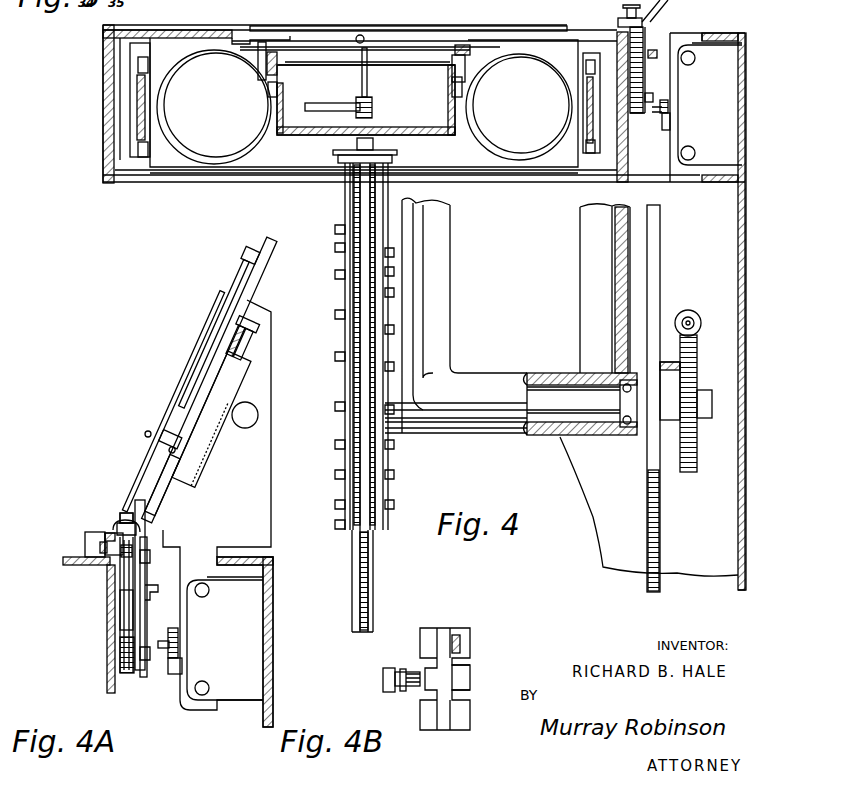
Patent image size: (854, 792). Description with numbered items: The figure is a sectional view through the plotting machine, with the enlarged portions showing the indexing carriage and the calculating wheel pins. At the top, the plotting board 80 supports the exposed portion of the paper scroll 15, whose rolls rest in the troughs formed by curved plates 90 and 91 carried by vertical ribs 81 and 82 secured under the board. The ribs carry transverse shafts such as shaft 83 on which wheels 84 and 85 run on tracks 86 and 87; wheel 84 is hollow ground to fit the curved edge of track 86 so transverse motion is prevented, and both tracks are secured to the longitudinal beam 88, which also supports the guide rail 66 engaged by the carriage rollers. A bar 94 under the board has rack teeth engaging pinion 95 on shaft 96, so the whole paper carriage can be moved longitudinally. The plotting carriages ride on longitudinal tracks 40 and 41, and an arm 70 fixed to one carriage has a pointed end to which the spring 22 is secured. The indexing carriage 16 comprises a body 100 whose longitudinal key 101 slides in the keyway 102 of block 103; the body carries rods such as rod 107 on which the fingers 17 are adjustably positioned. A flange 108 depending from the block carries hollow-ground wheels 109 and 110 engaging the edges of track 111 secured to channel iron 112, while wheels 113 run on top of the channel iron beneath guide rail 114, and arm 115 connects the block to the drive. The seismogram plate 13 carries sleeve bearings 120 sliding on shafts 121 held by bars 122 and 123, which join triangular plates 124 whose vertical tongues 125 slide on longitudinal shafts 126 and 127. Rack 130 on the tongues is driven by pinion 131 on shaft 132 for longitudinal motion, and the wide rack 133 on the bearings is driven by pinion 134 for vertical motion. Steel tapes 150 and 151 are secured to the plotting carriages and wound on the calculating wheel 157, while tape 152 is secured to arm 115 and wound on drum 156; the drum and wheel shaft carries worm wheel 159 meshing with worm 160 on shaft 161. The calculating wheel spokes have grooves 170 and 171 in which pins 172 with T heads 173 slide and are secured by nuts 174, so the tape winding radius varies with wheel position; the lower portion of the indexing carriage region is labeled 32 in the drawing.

In FIG. 4A, the plate 13 is at (247, 283).
In FIG. 4, the scroll 15 is at (515, 46).
In FIG. 4A, the indexing carriage 16 is at (110, 473).
In FIG. 4A, the fingers 17 is at (142, 432).
In FIG. 4, the spring 22 is at (303, 40).
In FIG. 4A, the bar lower end 32 is at (167, 455).
In FIG. 4, the longitudinal track 40 is at (133, 106).
In FIG. 4, the longitudinal track 41 is at (593, 117).
In FIG. 4, the rail 66 is at (358, 150).
In FIG. 4, the arm 70 is at (372, 27).
In FIG. 4, the plotting board 80 is at (421, 48).
In FIG. 4, the vertical rib 81 is at (262, 48).
In FIG. 4, the vertical rib 82 is at (470, 46).
In FIG. 4, the transverse shaft 83 is at (398, 63).
In FIG. 4, the wheel 84 is at (274, 52).
In FIG. 4, the wheel 85 is at (456, 55).
In FIG. 4, the track 86 is at (270, 100).
In FIG. 4, the track 87 is at (456, 97).
In FIG. 4, the longitudinal beam 88 is at (290, 134).
In FIG. 4, the curved plate 90 is at (200, 157).
In FIG. 4, the curved plate 91 is at (515, 160).
In FIG. 4, the bar 94 is at (363, 96).
In FIG. 4, the pinion 95 is at (357, 115).
In FIG. 4, the shaft 96 is at (325, 108).
In FIG. 4A, the body 100 is at (122, 510).
In FIG. 4A, the longitudinal key 101 is at (140, 523).
In FIG. 4A, the keyway 102 is at (116, 526).
In FIG. 4A, the block 103 is at (110, 538).
In FIG. 4A, the rod 107 is at (182, 413).
In FIG. 4A, the flange 108 is at (145, 627).
In FIG. 4A, the wheel 109 is at (128, 653).
In FIG. 4A, the wheel 110 is at (124, 562).
In FIG. 4A, the track 111 is at (128, 608).
In FIG. 4, the channel iron 112 is at (627, 143).
In FIG. 4A, the channel iron 112 is at (108, 625).
In FIG. 4A, the wheel 113 is at (102, 555).
In FIG. 4A, the guide rail 114 is at (90, 545).
In FIG. 4A, the arm 115 is at (165, 592).
In FIG. 4A, the sleeve bearing 120 is at (222, 380).
In FIG. 4A, the shaft 121 is at (242, 341).
In FIG. 4A, the bar 122 is at (165, 446).
In FIG. 4A, the bar 123 is at (233, 296).
In FIG. 4, the triangular plate 124 is at (715, 32).
In FIG. 4A, the triangular plate 124 is at (255, 517).
In FIG. 4, the vertical tongue 125 is at (697, 43).
In FIG. 4A, the vertical tongue 125 is at (240, 575).
In FIG. 4, the longitudinal shaft 126 is at (695, 153).
In FIG. 4A, the longitudinal shaft 126 is at (209, 688).
In FIG. 4, the longitudinal shaft 127 is at (695, 58).
In FIG. 4A, the longitudinal shaft 127 is at (209, 591).
In FIG. 4A, the rack 130 is at (172, 675).
In FIG. 4A, the pinion 131 is at (170, 658).
In FIG. 4A, the shaft 132 is at (162, 648).
In FIG. 4A, the wide rack 133 is at (225, 433).
In FIG. 4A, the pinion 134 is at (258, 410).
In FIG. 4, the steel tape 150 is at (347, 210).
In FIG. 4, the steel tape 151 is at (380, 245).
In FIG. 4, the steel tape 152 is at (655, 50).
In FIG. 4A, the steel tape 152 is at (150, 585).
In FIG. 4, the drum 156 is at (660, 478).
In FIG. 4, the calculating wheel 157 is at (352, 551).
In FIG. 4, the worm wheel 159 is at (698, 363).
In FIG. 4, the worm 160 is at (700, 313).
In FIG. 4, the shaft 161 is at (552, 402).
In FIG. 4B, the groove 170 is at (428, 694).
In FIG. 4B, the groove 171 is at (465, 694).
In FIG. 4B, the pin 172 is at (404, 669).
In FIG. 4B, the T head 173 is at (432, 668).
In FIG. 4B, the nut 174 is at (382, 667).